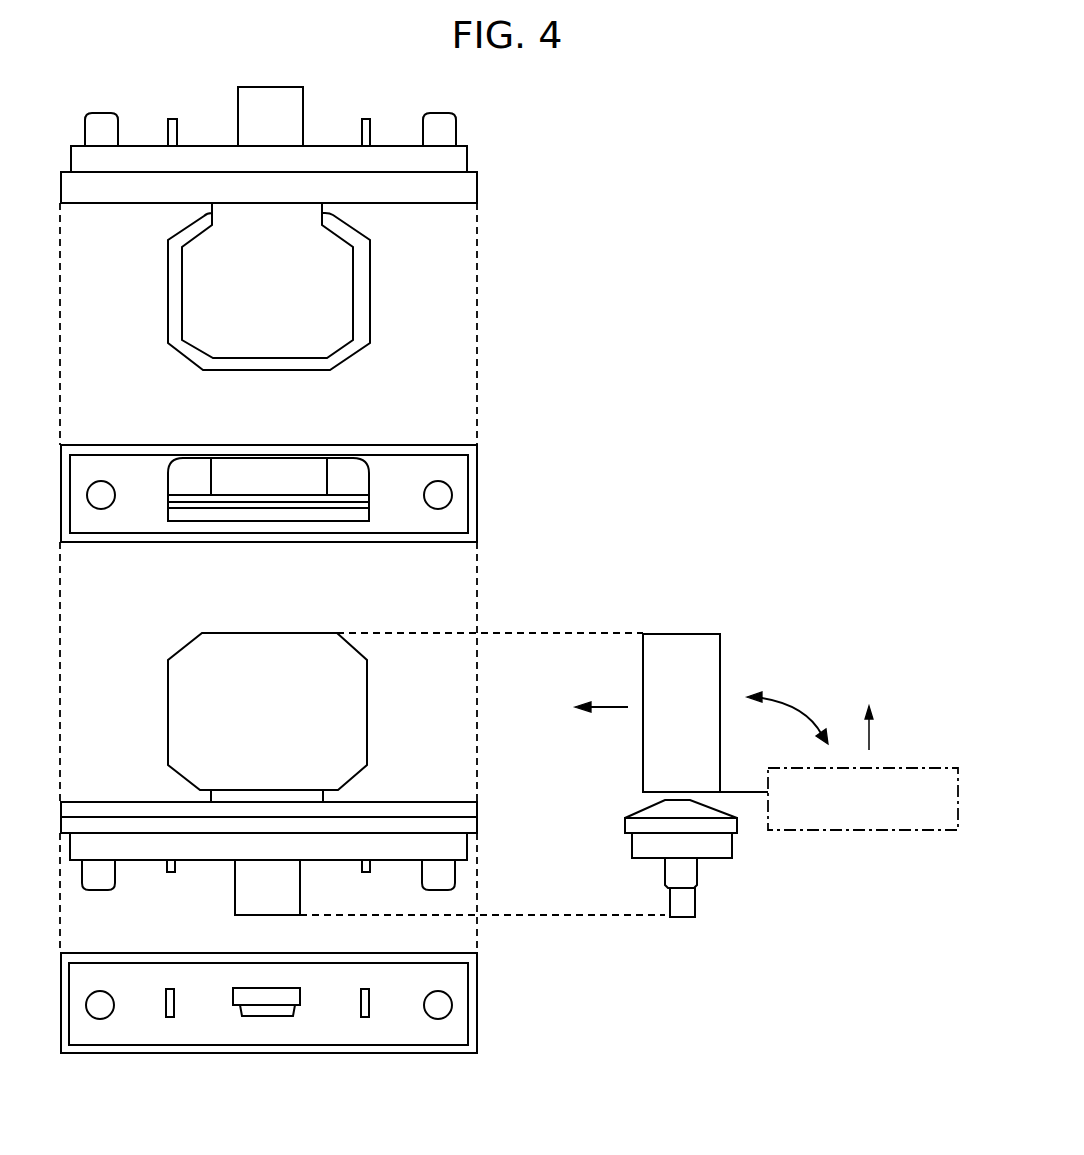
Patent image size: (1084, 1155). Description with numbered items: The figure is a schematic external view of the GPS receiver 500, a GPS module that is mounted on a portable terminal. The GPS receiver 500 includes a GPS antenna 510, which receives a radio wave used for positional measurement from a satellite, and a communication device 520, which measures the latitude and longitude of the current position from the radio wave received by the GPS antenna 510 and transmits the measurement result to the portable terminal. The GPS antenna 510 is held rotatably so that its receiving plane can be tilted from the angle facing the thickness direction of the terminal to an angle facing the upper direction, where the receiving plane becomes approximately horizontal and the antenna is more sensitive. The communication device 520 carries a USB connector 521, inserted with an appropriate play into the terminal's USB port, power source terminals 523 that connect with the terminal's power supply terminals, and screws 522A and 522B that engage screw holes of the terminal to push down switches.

The GPS receiver 500 is at (648, 131).
The GPS antenna 510 is at (367, 697).
The communication device 520 is at (478, 803).
The USB connector 521 is at (235, 893).
The screw 522A is at (423, 864).
The screw 522B is at (95, 890).
The power source terminals 523 is at (173, 119).